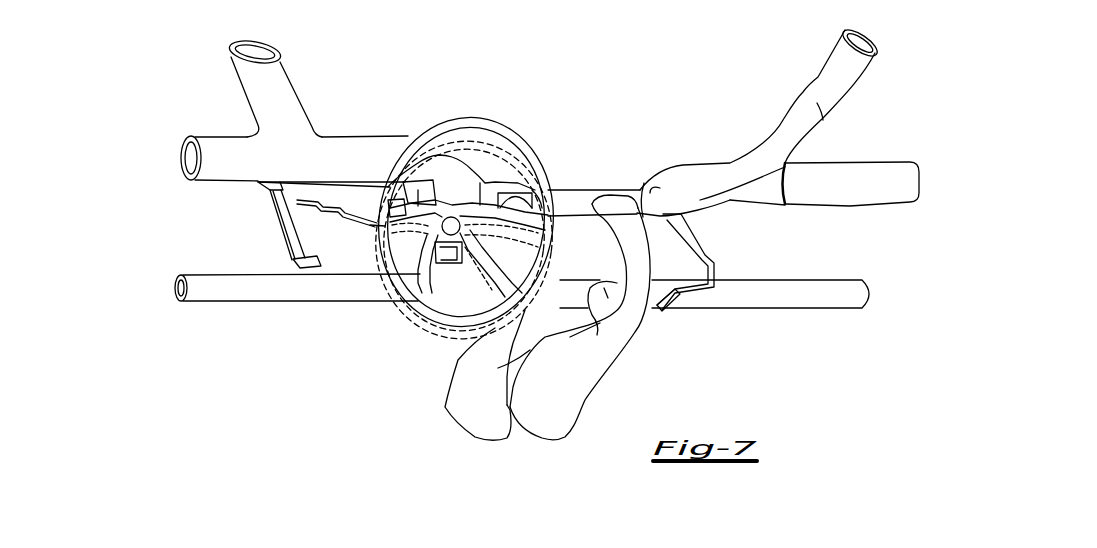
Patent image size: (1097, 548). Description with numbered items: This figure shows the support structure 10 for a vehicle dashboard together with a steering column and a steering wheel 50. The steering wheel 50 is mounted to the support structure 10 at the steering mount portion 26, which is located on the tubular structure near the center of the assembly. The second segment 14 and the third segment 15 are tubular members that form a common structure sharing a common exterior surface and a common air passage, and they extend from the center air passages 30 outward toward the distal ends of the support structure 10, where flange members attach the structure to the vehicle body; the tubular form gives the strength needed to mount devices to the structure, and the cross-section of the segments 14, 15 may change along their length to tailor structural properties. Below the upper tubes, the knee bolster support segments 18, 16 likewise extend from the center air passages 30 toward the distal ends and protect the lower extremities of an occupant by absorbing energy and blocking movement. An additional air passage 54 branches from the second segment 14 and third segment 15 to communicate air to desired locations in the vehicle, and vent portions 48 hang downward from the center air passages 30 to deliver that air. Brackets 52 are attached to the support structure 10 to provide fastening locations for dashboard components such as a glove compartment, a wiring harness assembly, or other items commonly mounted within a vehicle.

The support structure 10 is at (612, 86).
The second segment 14 is at (882, 170).
The third segment 15 is at (352, 146).
The knee bolster support segment 16 is at (837, 289).
The knee bolster support segment 18 is at (220, 283).
The steering mount portion 26 is at (343, 242).
The center air passages 30 is at (567, 353).
The vent portions 48 is at (552, 446).
The steering wheel 50 is at (418, 337).
The brackets 52 is at (285, 216).
The air passage 54 is at (287, 94).